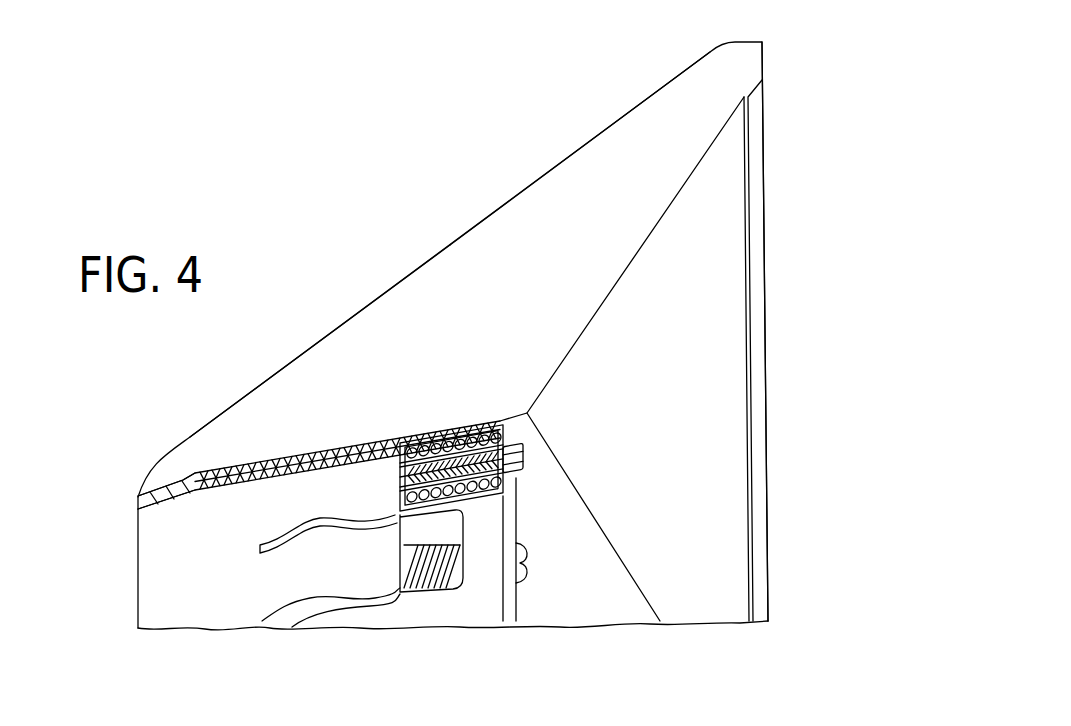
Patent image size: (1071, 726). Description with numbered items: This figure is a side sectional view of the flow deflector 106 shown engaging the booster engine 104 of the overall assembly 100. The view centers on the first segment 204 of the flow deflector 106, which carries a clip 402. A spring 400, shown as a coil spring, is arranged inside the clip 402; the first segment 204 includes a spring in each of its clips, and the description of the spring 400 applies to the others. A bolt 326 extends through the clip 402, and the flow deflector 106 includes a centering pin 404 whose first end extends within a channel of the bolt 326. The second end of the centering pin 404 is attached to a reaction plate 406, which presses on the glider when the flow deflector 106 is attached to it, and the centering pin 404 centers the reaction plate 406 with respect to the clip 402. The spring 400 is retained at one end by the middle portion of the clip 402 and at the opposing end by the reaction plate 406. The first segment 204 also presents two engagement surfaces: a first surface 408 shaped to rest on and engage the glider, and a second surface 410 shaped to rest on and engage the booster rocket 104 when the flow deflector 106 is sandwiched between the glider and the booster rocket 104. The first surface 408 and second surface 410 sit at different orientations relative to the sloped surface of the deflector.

The vehicle seat panel assembly 100 is at (830, 110).
The booster engine 104 is at (790, 393).
The flow deflector 106 is at (496, 186).
The first segment 204 is at (340, 305).
The bolt 326 is at (543, 457).
The spring 400 is at (535, 489).
The clip 402 is at (318, 458).
The centering pin 404 is at (448, 445).
The reaction plate 406 is at (418, 528).
The first surface 408 is at (172, 510).
The second surface 410 is at (672, 240).